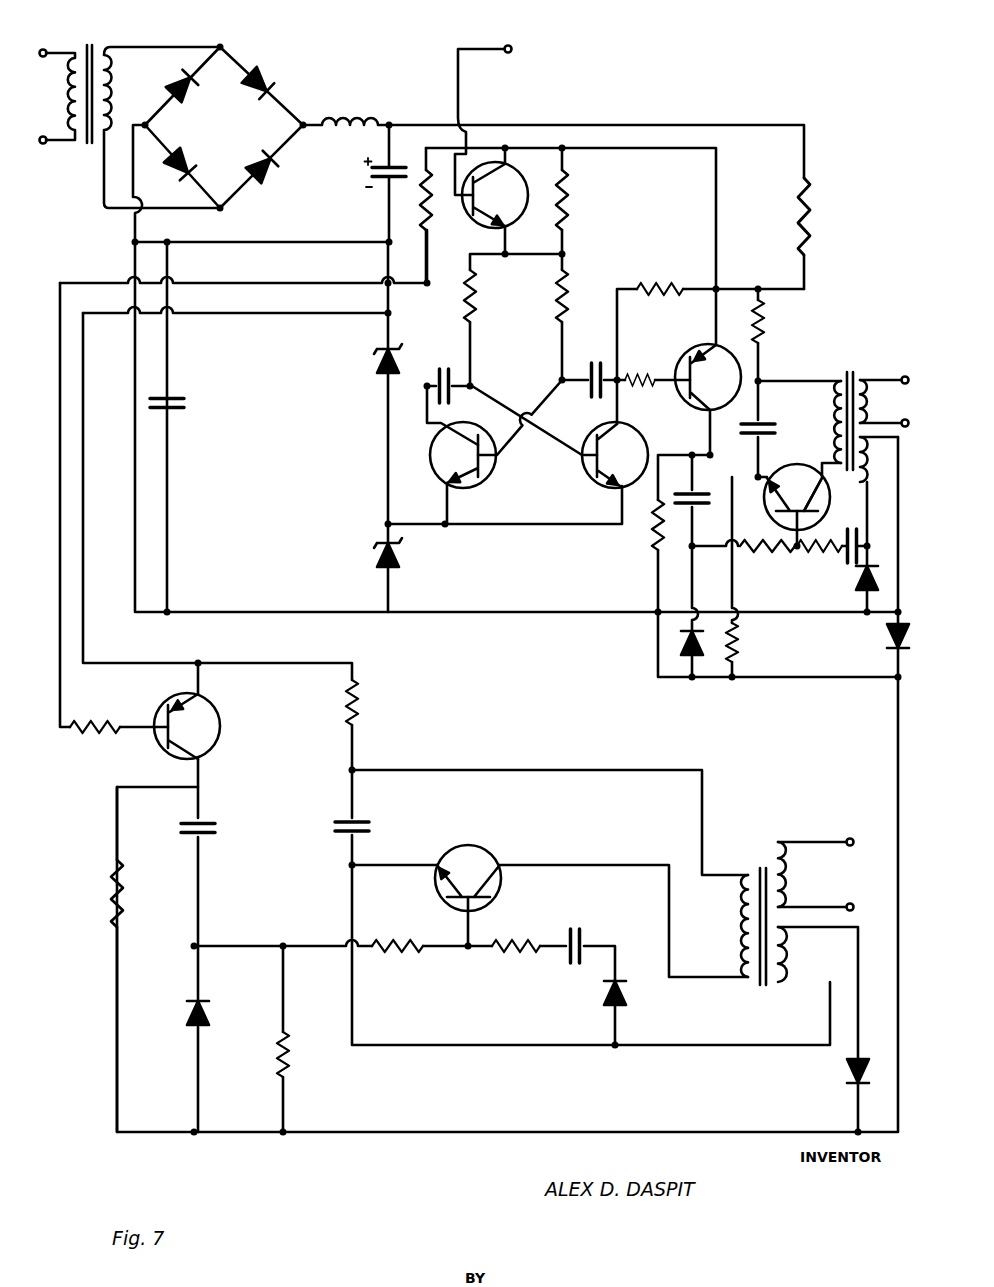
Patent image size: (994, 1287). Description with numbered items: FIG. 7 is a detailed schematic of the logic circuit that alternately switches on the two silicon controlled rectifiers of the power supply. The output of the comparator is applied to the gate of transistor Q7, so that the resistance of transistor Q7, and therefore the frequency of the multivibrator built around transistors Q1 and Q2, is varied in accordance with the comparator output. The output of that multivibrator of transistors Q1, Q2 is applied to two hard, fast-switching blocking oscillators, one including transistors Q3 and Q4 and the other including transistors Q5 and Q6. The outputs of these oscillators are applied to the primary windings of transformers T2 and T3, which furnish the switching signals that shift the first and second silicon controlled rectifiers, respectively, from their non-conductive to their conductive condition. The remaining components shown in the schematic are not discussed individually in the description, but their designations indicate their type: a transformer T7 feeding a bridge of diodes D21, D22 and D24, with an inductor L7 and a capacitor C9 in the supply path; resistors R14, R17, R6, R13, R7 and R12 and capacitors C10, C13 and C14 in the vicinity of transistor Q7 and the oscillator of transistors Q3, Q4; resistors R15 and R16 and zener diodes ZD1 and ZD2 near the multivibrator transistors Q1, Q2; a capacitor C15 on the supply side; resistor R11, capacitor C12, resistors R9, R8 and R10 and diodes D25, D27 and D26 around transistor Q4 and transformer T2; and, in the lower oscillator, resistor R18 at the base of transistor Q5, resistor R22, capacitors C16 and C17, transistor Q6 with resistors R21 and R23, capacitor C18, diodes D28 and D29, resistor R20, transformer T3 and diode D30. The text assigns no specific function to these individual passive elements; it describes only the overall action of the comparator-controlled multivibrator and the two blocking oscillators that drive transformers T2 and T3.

The transformer T7 is at (133, 113).
The diode D21 is at (176, 86).
The diode D22 is at (264, 86).
The diode D24 is at (223, 168).
The inductor L7 is at (346, 105).
The capacitor C9 is at (372, 179).
The resistor R14 is at (441, 213).
The transistor Q7 is at (495, 202).
The resistor R17 is at (582, 200).
The resistor R6 is at (820, 216).
The resistor R13 is at (660, 278).
The resistor R7 is at (774, 321).
The transformer T2 is at (850, 413).
The capacitor C10 is at (766, 415).
The transistor Q3 is at (697, 369).
The resistor R12 is at (637, 397).
The capacitor C13 is at (587, 370).
The capacitor C14 is at (445, 373).
The resistor R15 is at (487, 298).
The resistor R16 is at (579, 298).
The transistor Q1 is at (463, 473).
The transistor Q2 is at (608, 472).
The zener diode ZD1 is at (360, 370).
The zener diode ZD2 is at (410, 562).
The capacitor C15 is at (184, 425).
The resistor R11 is at (636, 530).
The capacitor C12 is at (701, 488).
The transistor Q4 is at (797, 482).
The resistor R9 is at (767, 535).
The resistor R8 is at (819, 561).
The diode D25 is at (841, 591).
The diode D27 is at (701, 654).
The resistor R10 is at (753, 646).
The diode D26 is at (873, 650).
The resistor R18 is at (95, 714).
The transistor Q5 is at (202, 726).
The resistor R22 is at (372, 702).
The capacitor C16 is at (218, 827).
The capacitor C17 is at (373, 827).
The transistor Q6 is at (473, 871).
The resistor R21 is at (397, 936).
The resistor R23 is at (516, 935).
The capacitor C18 is at (595, 941).
The diode D28 is at (214, 1009).
The diode D29 is at (635, 1007).
The resistor R20 is at (303, 1063).
The transformer T3 is at (780, 913).
The diode D30 is at (836, 1086).